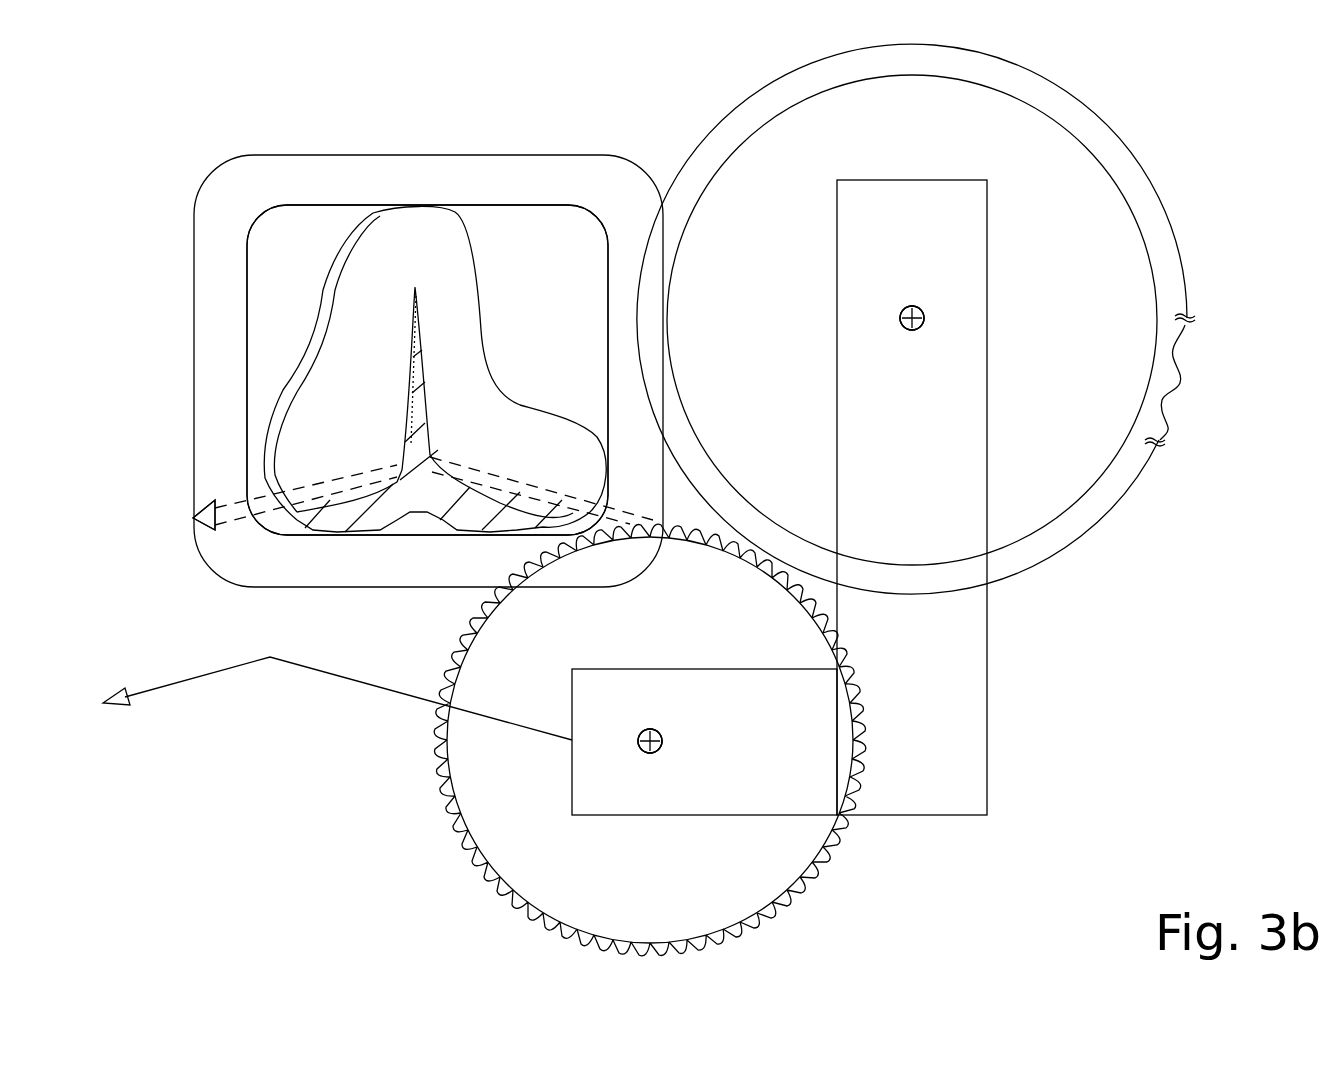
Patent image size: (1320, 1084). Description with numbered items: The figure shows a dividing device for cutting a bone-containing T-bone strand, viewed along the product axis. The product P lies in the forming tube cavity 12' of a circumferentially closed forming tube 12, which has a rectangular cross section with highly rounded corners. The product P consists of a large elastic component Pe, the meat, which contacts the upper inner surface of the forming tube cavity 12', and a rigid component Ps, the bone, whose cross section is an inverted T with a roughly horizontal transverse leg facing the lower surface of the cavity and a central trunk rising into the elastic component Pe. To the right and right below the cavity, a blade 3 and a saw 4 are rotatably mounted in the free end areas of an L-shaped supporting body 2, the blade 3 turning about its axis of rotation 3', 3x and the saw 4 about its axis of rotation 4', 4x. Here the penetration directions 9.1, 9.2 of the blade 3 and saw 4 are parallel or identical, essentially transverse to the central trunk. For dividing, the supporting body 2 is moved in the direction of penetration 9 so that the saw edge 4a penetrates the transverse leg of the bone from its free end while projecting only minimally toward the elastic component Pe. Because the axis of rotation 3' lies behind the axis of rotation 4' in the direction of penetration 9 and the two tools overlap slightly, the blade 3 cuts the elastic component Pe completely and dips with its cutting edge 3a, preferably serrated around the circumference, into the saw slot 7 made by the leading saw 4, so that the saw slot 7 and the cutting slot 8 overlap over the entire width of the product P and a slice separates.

The supporting body 2 is at (912, 497).
The blade 3 is at (912, 319).
The axis of rotation of blade 3' is at (934, 296).
The rotation axis of first roller 3x is at (912, 318).
The cutting edge 3a is at (1173, 387).
The saw 4 is at (650, 740).
The axis of rotation of saw 4' is at (692, 727).
The rotation axis of second roller 4x is at (650, 741).
The saw edge 4a is at (507, 583).
The saw slot 7 is at (293, 480).
The cutting slot 8 is at (337, 473).
The direction of penetration 9 is at (155, 690).
The penetration direction 9.1 is at (230, 518).
The penetration direction 9.2 is at (233, 502).
The forming tube 12 is at (428, 371).
The forming tube cavity 12' is at (427, 370).
The product P is at (505, 305).
The elastic component Pe is at (435, 437).
The rigid component Ps is at (349, 515).